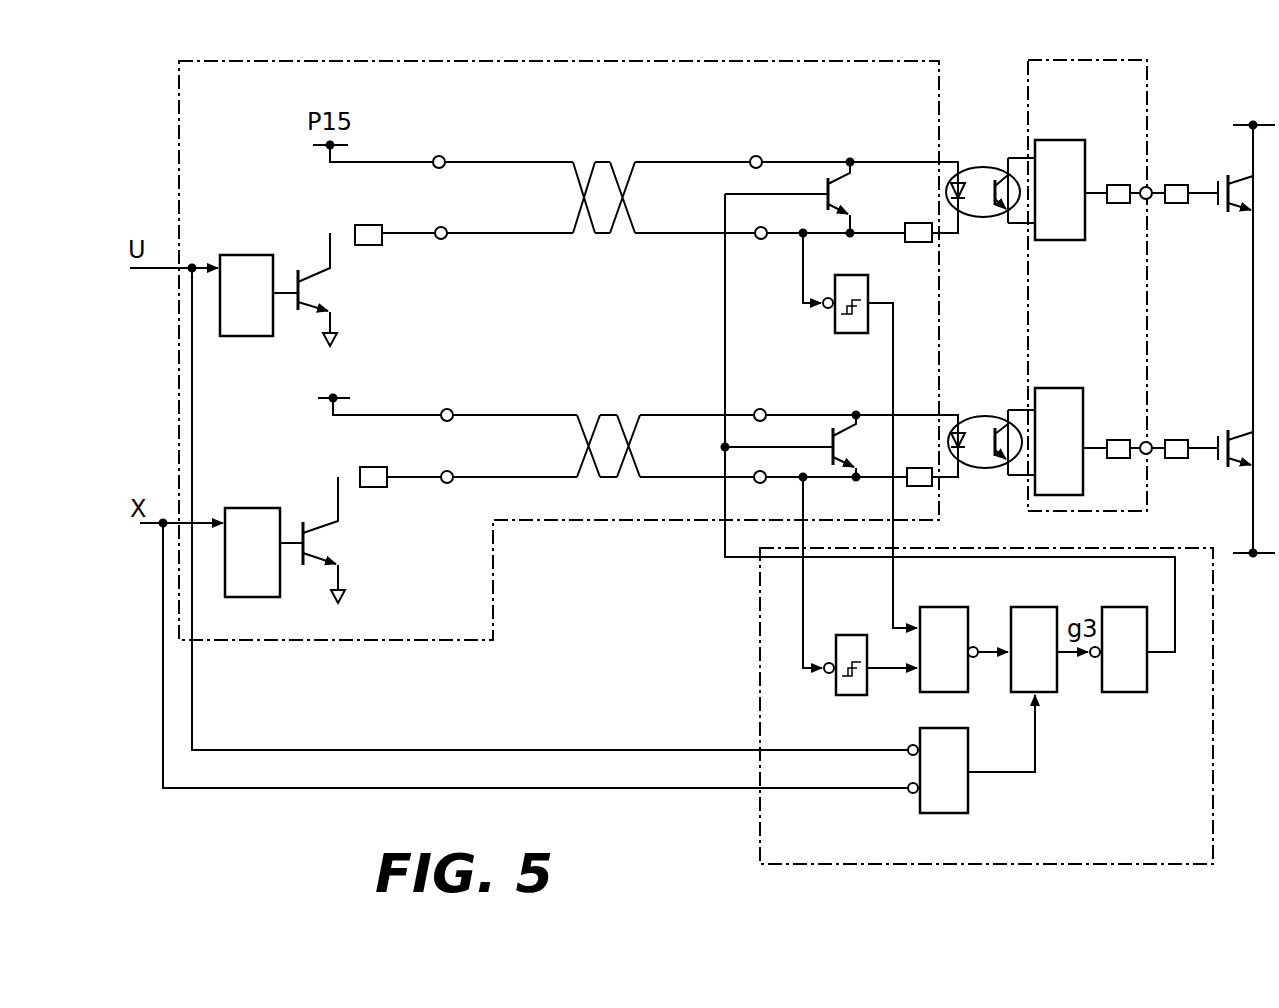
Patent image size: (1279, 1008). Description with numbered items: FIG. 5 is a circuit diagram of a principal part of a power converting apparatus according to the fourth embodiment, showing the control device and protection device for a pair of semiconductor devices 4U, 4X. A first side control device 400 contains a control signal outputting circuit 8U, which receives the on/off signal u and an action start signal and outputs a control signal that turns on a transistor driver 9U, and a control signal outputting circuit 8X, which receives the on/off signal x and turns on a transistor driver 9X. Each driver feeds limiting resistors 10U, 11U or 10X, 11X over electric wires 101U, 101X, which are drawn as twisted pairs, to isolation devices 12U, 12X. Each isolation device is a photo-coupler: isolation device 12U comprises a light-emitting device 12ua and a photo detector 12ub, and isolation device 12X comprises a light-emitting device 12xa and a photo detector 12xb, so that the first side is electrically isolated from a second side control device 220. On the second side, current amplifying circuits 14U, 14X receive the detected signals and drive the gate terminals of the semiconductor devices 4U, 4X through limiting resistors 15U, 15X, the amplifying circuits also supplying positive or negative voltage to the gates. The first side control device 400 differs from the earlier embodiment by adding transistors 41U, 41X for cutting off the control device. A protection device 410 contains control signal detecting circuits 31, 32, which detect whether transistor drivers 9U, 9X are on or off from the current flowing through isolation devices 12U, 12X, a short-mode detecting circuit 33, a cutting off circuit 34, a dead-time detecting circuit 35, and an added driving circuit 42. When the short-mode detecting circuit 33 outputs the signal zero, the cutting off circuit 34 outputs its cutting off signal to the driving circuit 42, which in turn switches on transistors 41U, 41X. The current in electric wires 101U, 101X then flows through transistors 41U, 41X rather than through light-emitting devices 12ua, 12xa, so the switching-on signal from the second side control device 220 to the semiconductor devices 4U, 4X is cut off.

The first side control device 400 is at (648, 60).
The second side control device 220 is at (1150, 72).
The protection device 410 is at (935, 866).
The control signal outputting circuit 8U is at (233, 255).
The control signal outputting circuit 8X is at (245, 508).
The transistor driver 9U is at (312, 284).
The transistor driver 9X is at (318, 541).
The limiting resistor 10U is at (356, 225).
The limiting resistor 10X is at (370, 467).
The electric wire 101U is at (702, 136).
The electric wire 101X is at (680, 370).
The transistor 41U is at (855, 183).
The transistor 41X is at (850, 440).
The limiting resistor 11U is at (912, 223).
The limiting resistor 11X is at (912, 486).
The isolation device 12U is at (978, 166).
The isolation device 12X is at (985, 416).
The light-emitting device 12ua is at (962, 212).
The photo detector 12ub is at (1001, 210).
The light-emitting device 12xa is at (962, 452).
The photo detector 12xb is at (1003, 460).
The current amplifying circuit 14U is at (1063, 140).
The current amplifying circuit 14X is at (1053, 388).
The limiting resistor 15U is at (1177, 185).
The limiting resistor 15X is at (1177, 440).
The semiconductor device 4U is at (1240, 212).
The semiconductor device 4X is at (1243, 462).
The control signal detecting circuit 31 is at (835, 325).
The control signal detecting circuit 32 is at (845, 695).
The short-mode detecting circuit 33 is at (942, 607).
The cutting off circuit 34 is at (1042, 607).
The dead-time detecting circuit 35 is at (938, 813).
The driving circuit 42 is at (1125, 692).